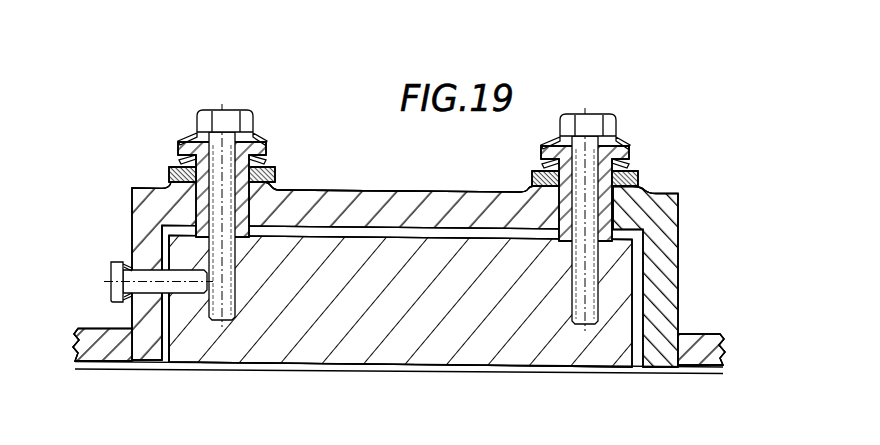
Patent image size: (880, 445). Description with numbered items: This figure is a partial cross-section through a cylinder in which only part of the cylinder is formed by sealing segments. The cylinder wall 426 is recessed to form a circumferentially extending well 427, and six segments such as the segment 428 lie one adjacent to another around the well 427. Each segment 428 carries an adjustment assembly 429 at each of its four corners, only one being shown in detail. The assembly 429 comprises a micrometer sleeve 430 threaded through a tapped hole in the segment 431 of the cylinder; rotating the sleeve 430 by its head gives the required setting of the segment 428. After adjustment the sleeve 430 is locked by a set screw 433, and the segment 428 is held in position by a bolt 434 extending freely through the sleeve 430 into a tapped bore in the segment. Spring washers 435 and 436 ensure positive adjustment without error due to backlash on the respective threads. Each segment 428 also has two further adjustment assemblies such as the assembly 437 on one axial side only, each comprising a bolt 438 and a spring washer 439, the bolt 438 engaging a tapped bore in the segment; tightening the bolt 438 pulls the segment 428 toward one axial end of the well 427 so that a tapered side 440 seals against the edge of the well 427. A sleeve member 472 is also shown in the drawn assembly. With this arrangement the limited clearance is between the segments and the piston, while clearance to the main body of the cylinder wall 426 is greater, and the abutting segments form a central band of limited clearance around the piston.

The cylinder wall 426 is at (698, 338).
The well 427 is at (622, 240).
The segment 428 is at (545, 357).
The adjustment assembly 429 is at (377, 198).
The micrometer sleeve 430 is at (250, 190).
The segment of the cylinder 431 is at (385, 190).
The set screw 433 is at (169, 174).
The bolt 434 is at (221, 110).
The spring washer 435 is at (190, 136).
The spring washer 436 is at (181, 160).
The further adjustment assembly 437 is at (131, 266).
The bolt 438 is at (112, 277).
The spring washer 439 is at (127, 306).
The tapered side 440 is at (164, 312).
The sleeve bushing 472 is at (268, 148).